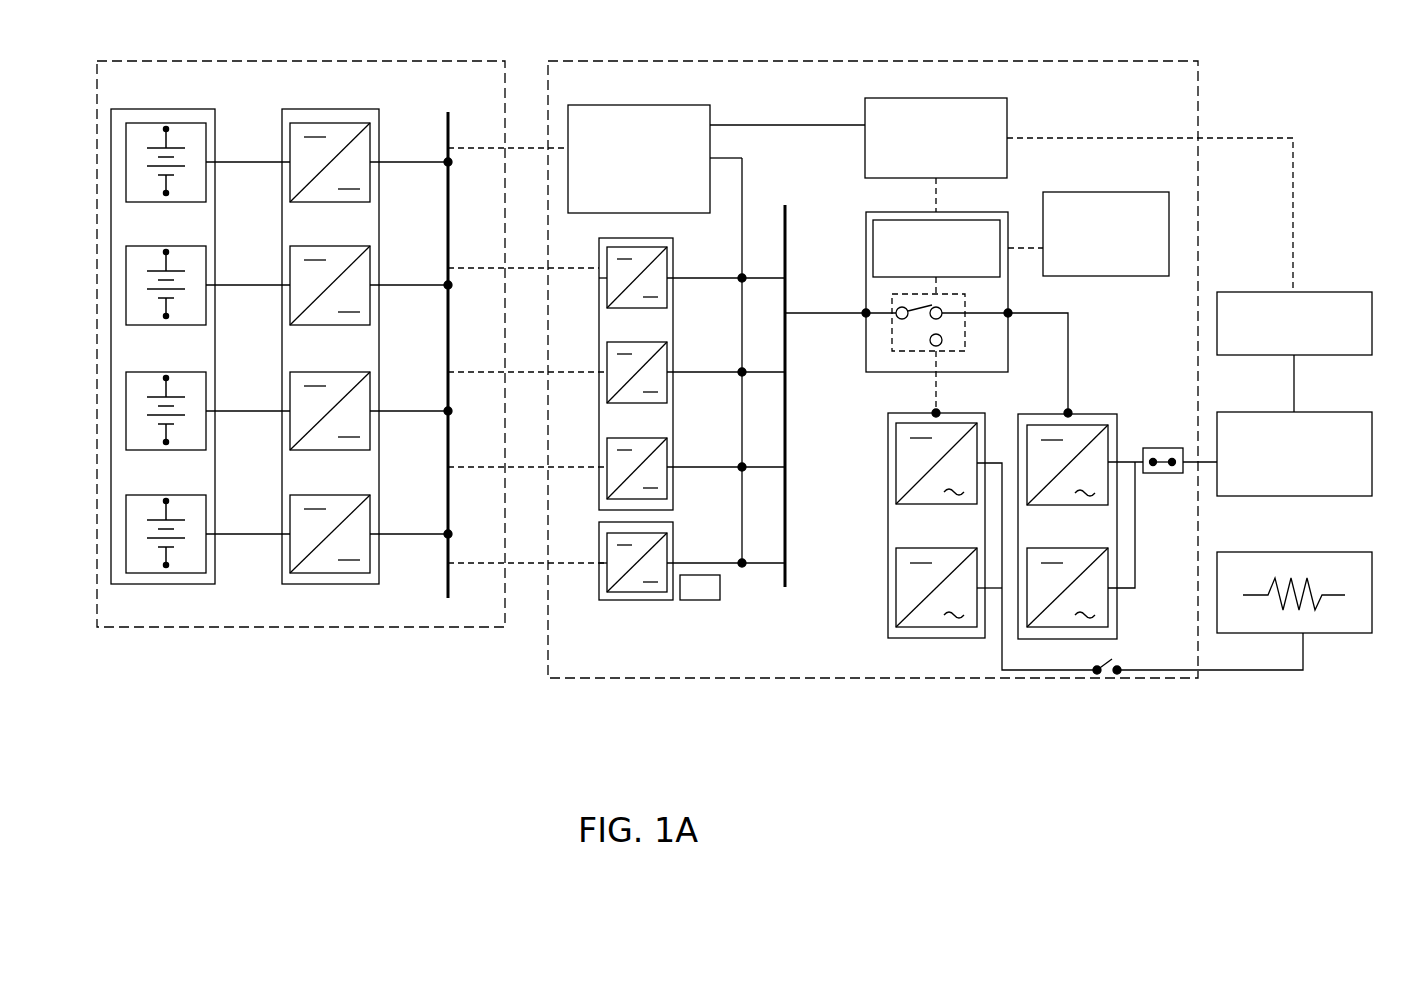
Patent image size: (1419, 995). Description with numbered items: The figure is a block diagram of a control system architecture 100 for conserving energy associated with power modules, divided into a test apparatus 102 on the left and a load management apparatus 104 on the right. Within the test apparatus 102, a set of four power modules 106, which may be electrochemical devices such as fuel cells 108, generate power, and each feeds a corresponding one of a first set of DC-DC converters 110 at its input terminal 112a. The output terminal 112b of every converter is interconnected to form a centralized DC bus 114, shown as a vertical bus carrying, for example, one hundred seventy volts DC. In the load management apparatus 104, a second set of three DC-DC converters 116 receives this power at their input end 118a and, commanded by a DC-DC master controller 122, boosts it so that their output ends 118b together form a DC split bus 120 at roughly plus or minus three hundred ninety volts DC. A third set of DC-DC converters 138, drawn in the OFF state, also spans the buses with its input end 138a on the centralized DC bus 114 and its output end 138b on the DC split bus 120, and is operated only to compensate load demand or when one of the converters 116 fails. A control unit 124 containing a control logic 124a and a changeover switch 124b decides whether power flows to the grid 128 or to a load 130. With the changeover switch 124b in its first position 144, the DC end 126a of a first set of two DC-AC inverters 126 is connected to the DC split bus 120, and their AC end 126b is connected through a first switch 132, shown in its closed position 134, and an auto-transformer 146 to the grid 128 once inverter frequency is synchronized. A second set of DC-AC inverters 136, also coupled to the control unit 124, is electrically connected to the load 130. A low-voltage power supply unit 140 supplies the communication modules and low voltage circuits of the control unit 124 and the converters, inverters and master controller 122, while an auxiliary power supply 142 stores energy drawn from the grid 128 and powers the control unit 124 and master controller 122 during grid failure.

The control system architecture 100 is at (922, 768).
The test apparatus 102 is at (342, 91).
The load management apparatus 104 is at (1028, 91).
The set of power modules 106 is at (111, 162).
The fuel cells 108 is at (143, 298).
The first set of DC-DC converters 110 is at (282, 149).
The input terminal 112a is at (267, 162).
The output terminal 112b is at (417, 162).
The centralized DC bus 114 is at (446, 592).
The second set of DC-DC converters 116 is at (599, 327).
The input end 118a is at (580, 374).
The output end 118b is at (715, 374).
The DC split bus 120 is at (787, 252).
The DC-DC master controller 122 is at (657, 209).
The control unit 124 is at (880, 372).
The control logic 124a is at (992, 274).
The changeover switch 124b is at (890, 306).
The first set of DC-AC inverters 126 is at (1062, 412).
The DC end 126a is at (1068, 350).
The AC end 126b is at (1138, 460).
The grid 128 is at (1312, 349).
The load 130 is at (1372, 590).
The first switch 132 is at (1163, 474).
The closed position 134 is at (1165, 450).
The second set of DC-AC inverters 136 is at (888, 476).
The third set of DC-DC converters 138 is at (599, 553).
The input end 138a is at (595, 565).
The output end 138b is at (735, 563).
The power supply unit 140 is at (1150, 272).
The auxiliary power supply 142 is at (995, 176).
The first position 144 is at (918, 317).
The auto-transformer 146 is at (1312, 491).